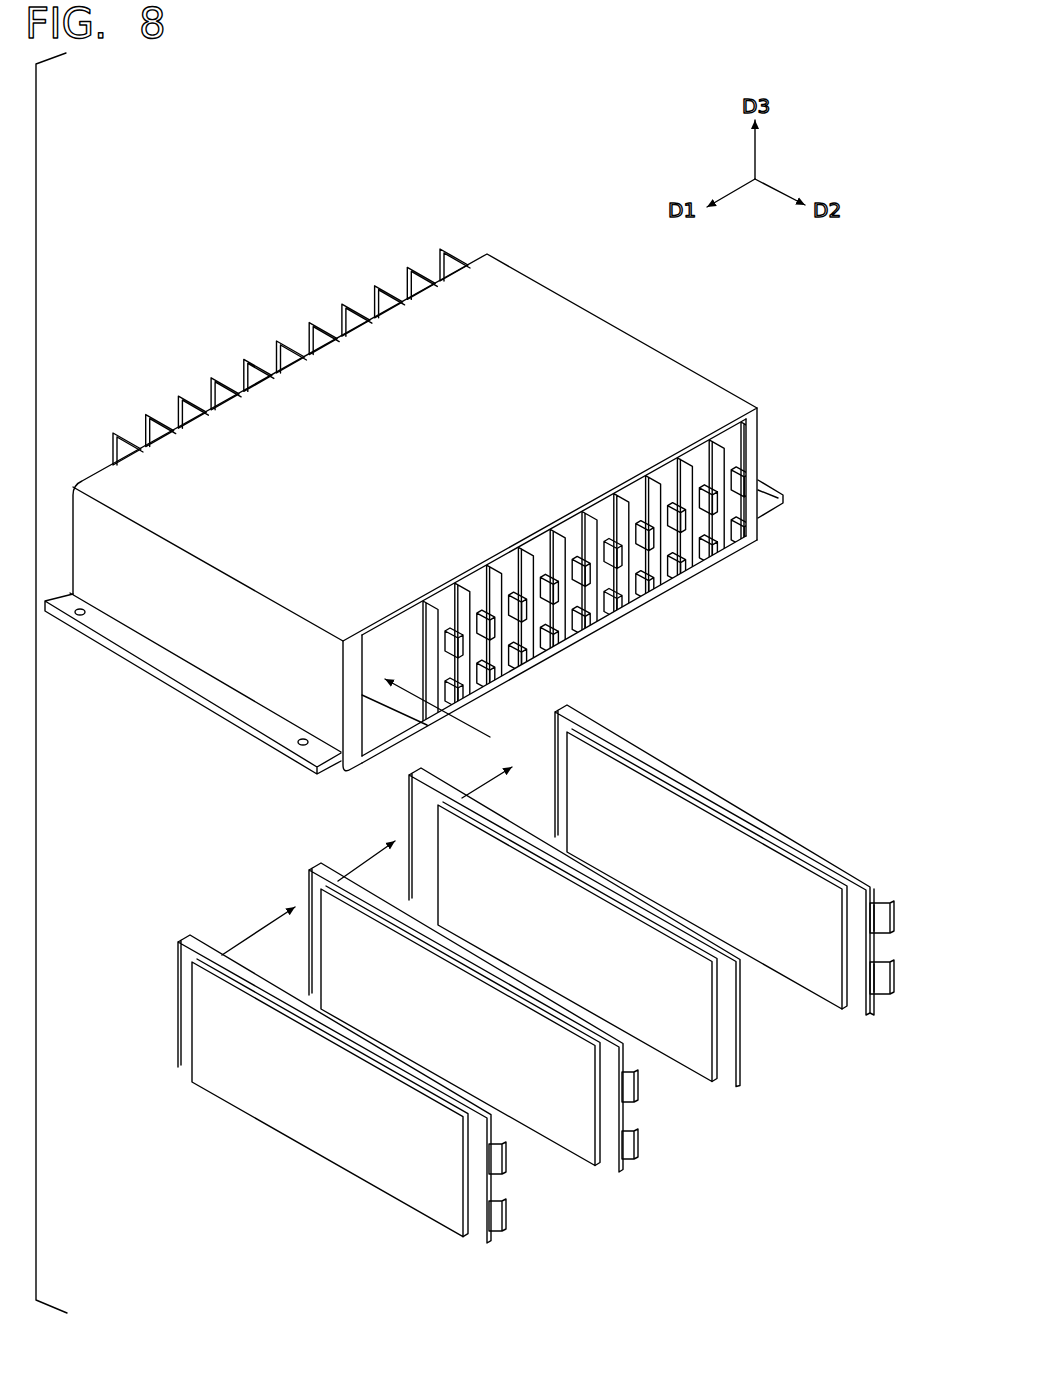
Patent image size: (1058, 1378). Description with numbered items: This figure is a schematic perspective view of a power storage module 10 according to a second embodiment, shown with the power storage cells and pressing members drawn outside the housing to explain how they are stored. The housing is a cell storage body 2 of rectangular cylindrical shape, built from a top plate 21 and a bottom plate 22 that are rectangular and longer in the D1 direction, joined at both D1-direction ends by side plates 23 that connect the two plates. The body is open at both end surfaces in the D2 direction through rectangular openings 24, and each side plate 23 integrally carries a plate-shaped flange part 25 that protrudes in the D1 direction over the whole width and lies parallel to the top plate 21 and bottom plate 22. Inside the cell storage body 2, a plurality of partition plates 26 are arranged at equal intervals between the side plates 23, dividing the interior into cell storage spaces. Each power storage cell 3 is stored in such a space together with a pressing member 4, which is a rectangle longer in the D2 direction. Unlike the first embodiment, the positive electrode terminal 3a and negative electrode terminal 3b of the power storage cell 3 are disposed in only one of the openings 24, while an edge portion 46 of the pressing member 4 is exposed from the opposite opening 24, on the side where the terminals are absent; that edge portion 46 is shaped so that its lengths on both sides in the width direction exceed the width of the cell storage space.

The power storage module 10 is at (226, 254).
The cell storage body 2 is at (620, 327).
The top plate 21 is at (397, 331).
The bottom plate 22 is at (357, 777).
The side plate 23 is at (262, 687).
The opening 24 is at (745, 442).
The flange part 25 is at (145, 675).
The partition plate 26 is at (413, 600).
The power storage cell 3 is at (323, 1130).
The positive electrode terminal 3a is at (503, 1228).
The negative electrode terminal 3b is at (500, 1170).
The pressing member 4 is at (698, 1024).
The edge portion 46 is at (113, 452).